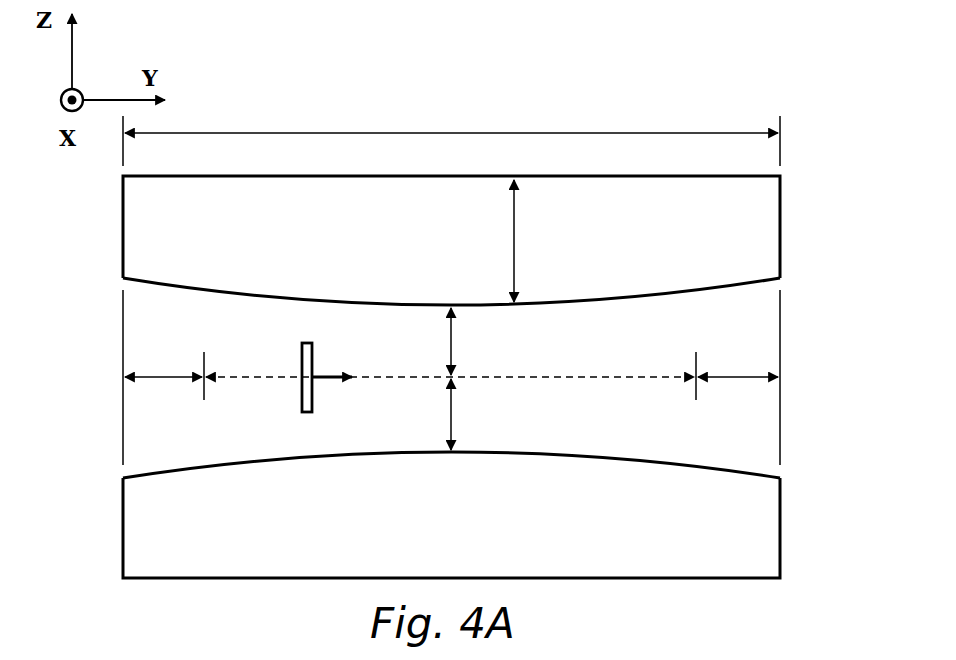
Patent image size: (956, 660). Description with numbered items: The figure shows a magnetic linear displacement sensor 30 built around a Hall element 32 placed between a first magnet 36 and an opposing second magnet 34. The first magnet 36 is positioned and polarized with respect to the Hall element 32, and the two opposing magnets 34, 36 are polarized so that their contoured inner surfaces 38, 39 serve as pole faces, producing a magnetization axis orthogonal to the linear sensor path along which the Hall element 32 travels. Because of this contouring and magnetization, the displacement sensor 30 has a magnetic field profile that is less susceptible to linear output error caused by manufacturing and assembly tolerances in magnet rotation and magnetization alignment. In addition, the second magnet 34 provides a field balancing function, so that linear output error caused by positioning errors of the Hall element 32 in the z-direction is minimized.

The magnetic linear displacement sensor 30 is at (700, 92).
The Hall element 32 is at (300, 365).
The second magnet 34 is at (246, 170).
The first magnet 36 is at (243, 583).
The contoured inner surface 38 is at (676, 294).
The contoured inner surface 39 is at (297, 455).